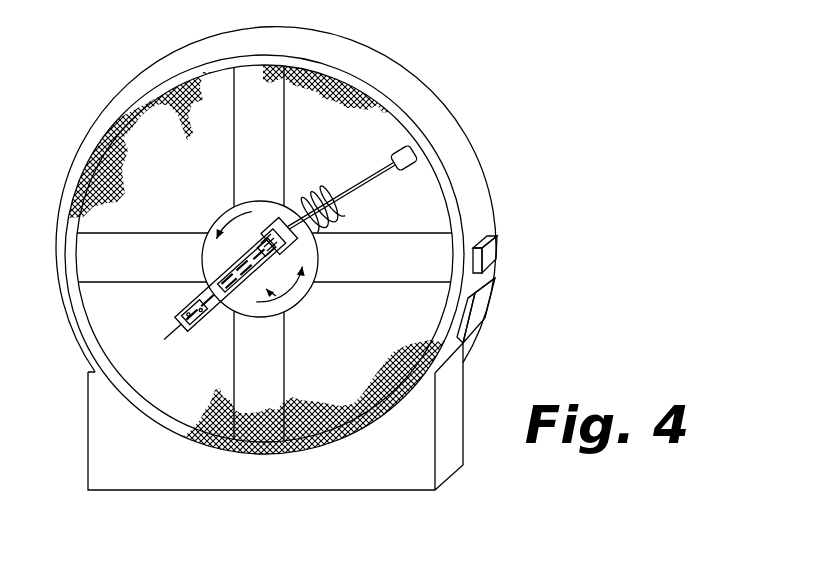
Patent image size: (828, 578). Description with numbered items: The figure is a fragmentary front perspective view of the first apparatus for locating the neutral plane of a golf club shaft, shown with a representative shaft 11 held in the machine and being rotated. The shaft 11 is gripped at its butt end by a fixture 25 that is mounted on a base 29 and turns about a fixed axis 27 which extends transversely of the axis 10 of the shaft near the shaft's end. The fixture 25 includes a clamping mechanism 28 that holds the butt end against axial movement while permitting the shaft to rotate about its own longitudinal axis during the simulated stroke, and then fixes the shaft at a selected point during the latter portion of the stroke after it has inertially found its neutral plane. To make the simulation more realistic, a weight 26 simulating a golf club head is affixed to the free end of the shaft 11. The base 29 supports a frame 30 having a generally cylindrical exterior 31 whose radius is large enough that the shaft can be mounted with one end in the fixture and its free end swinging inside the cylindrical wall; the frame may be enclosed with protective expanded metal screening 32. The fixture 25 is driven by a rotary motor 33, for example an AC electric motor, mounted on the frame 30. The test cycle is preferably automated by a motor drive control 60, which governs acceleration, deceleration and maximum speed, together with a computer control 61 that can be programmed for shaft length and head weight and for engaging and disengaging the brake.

The axis of the shaft 10 is at (335, 242).
The shaft 11 is at (354, 197).
The fixture 25 is at (288, 302).
The weight 26 is at (412, 168).
The fixed axis 27 is at (292, 254).
The clamping mechanism 28 is at (236, 267).
The base 29 is at (448, 420).
The frame 30 is at (288, 151).
The cylindrical exterior 31 is at (410, 82).
The expanded metal screening 32 is at (152, 100).
The rotary motor 33 is at (218, 220).
The motor drive control 60 is at (488, 252).
The computer control 61 is at (485, 307).